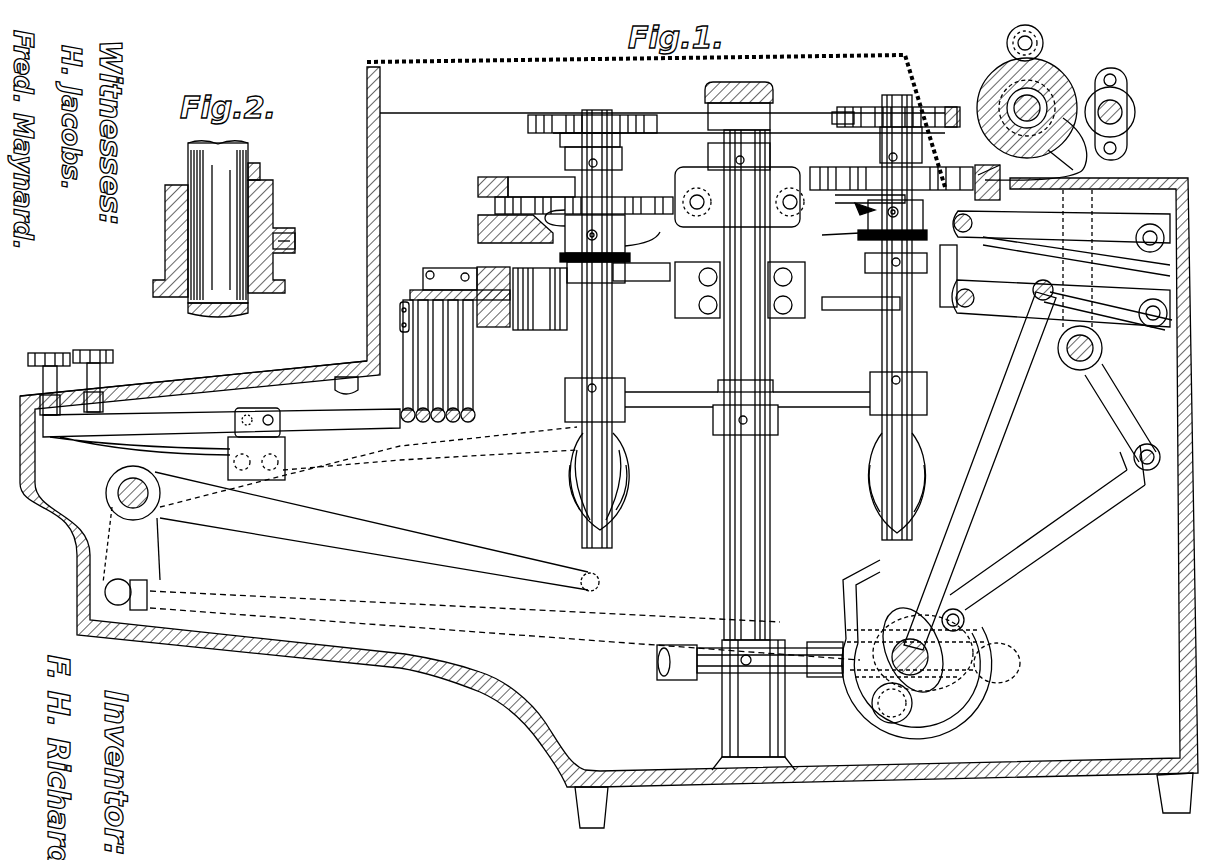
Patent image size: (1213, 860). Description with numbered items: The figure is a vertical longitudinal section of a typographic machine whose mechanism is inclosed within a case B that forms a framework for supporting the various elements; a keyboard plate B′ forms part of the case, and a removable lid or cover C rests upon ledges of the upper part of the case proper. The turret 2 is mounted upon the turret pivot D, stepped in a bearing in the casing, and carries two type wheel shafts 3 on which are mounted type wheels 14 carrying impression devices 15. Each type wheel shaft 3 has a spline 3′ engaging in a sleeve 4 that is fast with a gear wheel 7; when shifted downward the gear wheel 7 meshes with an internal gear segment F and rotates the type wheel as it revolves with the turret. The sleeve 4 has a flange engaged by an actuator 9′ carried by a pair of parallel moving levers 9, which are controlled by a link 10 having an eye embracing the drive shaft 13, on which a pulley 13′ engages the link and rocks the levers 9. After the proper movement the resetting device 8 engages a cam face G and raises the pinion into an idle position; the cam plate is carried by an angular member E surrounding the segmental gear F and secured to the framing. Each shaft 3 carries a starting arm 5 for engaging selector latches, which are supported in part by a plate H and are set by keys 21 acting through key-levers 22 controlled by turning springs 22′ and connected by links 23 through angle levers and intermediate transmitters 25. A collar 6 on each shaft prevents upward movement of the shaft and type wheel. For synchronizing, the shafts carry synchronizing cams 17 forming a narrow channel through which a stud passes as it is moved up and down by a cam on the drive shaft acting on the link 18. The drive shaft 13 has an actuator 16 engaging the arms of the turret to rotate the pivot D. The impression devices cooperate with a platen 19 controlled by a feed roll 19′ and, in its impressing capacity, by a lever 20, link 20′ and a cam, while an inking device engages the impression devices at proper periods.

In FIG. 1, the case B is at (385, 665).
In FIG. 1, the keyboard plate B′ is at (198, 376).
In FIG. 1, the removable lid or cover C is at (656, 109).
In FIG. 1, the turret pivot D is at (768, 480).
In FIG. 1, the angular member E is at (478, 210).
In FIG. 1, the internal gear segment F is at (497, 178).
In FIG. 1, the cam face G is at (488, 286).
In FIG. 1, the plate H is at (716, 266).
In FIG. 1, the turret 2 is at (792, 650).
In FIG. 2, the type wheel shaft 3 is at (190, 306).
In FIG. 1, the type wheel shaft 3 is at (612, 354).
In FIG. 2, the spline 3′ is at (258, 186).
In FIG. 1, the spline 3′ is at (866, 168).
In FIG. 2, the sleeve 4 is at (165, 222).
In FIG. 1, the sleeve 4 is at (625, 250).
In FIG. 1, the starting arm 5 is at (660, 274).
In FIG. 1, the collar 6 is at (622, 162).
In FIG. 1, the gear wheel 7 is at (545, 198).
In FIG. 1, the resetting device 8 is at (625, 226).
In FIG. 1, the parallel moving levers 9 is at (1016, 235).
In FIG. 1, the actuator 9′ is at (988, 240).
In FIG. 1, the link 10 is at (986, 473).
In FIG. 1, the drive shaft 13 is at (905, 612).
In FIG. 1, the pulley 13′ is at (948, 690).
In FIG. 1, the type wheel 14 is at (573, 115).
In FIG. 1, the impression devices 15 is at (606, 115).
In FIG. 1, the actuator 16 is at (847, 680).
In FIG. 1, the synchronizing cams 17 is at (650, 480).
In FIG. 1, the link 18 is at (350, 606).
In FIG. 1, the platen 19 is at (1000, 90).
In FIG. 1, the feed roll 19′ is at (1105, 95).
In FIG. 1, the lever 20 is at (1032, 151).
In FIG. 1, the link 20′ is at (1095, 500).
In FIG. 1, the keys 21 is at (55, 356).
In FIG. 1, the key-levers 22 is at (305, 404).
In FIG. 1, the turning springs 22′ is at (105, 449).
In FIG. 1, the links 23 is at (455, 380).
In FIG. 1, the intermediate transmitters 25 is at (435, 270).